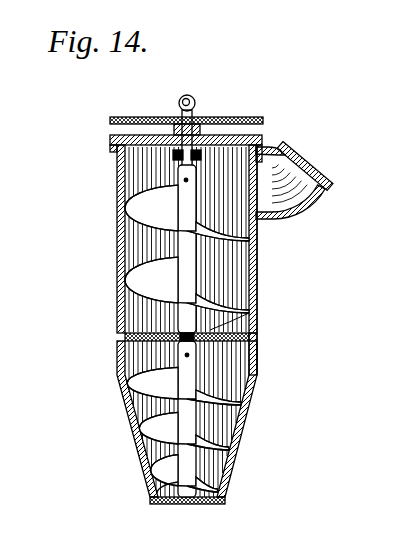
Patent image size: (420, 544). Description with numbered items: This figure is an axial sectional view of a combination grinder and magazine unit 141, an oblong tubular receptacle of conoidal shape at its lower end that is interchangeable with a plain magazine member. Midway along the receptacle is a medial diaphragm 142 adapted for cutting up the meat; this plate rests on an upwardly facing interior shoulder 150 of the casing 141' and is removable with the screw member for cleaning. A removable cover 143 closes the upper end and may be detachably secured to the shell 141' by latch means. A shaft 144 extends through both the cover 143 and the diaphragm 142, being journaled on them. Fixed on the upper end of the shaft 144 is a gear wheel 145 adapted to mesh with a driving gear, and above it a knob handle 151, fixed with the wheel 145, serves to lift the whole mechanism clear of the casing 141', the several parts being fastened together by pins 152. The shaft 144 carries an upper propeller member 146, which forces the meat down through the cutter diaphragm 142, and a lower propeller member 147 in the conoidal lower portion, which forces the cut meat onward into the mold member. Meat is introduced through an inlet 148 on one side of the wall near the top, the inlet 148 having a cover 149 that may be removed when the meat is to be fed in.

The combination grinder and magazine unit 141 is at (166, 239).
The casing 141' is at (278, 260).
The medial diaphragm 142 is at (125, 336).
The removable cover 143 is at (110, 141).
The shaft 144 is at (196, 170).
The gear wheel 145 is at (110, 119).
The upper propeller member 146 is at (142, 207).
The lower propeller member 147 is at (128, 378).
The inlet 148 is at (287, 187).
The inlet cover 149 is at (307, 170).
The interior shoulder 150 is at (257, 337).
The knob handle 151 is at (196, 100).
The pins 152 is at (263, 126).